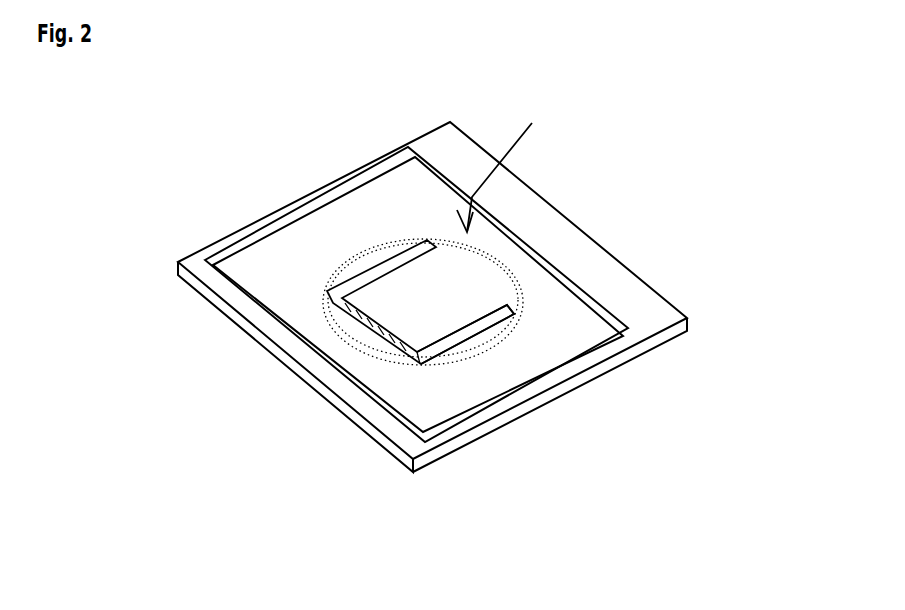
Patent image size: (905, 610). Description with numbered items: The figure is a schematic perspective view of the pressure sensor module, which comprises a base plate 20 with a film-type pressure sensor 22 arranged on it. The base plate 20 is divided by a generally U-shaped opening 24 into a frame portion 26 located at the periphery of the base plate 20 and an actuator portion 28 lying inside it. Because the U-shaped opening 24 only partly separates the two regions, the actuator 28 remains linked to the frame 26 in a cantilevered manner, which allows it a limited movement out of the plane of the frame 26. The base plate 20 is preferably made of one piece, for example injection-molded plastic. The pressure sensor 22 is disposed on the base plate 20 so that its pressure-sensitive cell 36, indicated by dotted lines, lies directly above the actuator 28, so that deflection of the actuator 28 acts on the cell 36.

The base plate 20 is at (662, 302).
The film-type pressure sensor 22 is at (433, 160).
The U-shaped opening 24 is at (497, 306).
The frame portion 26 is at (274, 337).
The actuator portion 28 is at (470, 239).
The pressure-sensitive cell 36 is at (510, 170).